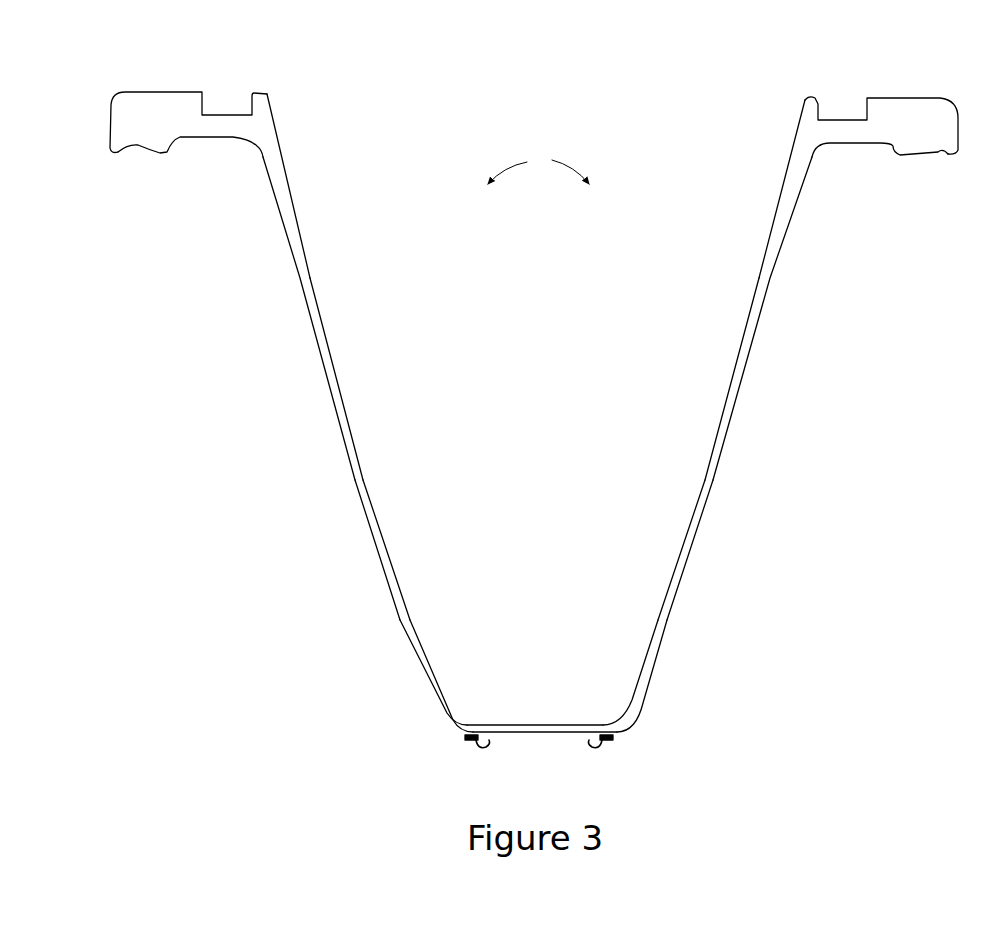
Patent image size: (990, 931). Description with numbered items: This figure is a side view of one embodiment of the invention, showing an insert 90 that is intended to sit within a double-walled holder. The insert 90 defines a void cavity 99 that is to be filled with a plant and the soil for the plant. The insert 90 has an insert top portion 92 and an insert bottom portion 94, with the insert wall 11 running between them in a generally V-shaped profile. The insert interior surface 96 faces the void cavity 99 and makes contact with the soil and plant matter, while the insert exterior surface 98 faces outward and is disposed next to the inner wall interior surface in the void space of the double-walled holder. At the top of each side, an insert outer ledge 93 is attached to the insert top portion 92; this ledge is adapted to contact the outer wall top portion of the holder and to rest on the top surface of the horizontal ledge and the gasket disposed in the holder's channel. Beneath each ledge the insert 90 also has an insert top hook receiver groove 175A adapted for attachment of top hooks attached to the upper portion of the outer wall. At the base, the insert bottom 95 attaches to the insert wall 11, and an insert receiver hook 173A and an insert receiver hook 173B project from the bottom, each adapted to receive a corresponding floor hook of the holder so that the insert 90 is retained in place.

The insert wall 11 is at (333, 408).
The insert 90 is at (324, 347).
The insert top portion 92 is at (286, 164).
The insert outer ledge 93 is at (146, 89).
The insert bottom portion 94 is at (444, 717).
The insert bottom 95 is at (537, 722).
The insert interior surface 96 is at (361, 452).
The insert exterior surface 98 is at (296, 283).
The void cavity 99 is at (538, 169).
The insert receiver hook 173A is at (614, 737).
The insert receiver hook 173B is at (456, 737).
The insert top hook receiver groove 175A is at (139, 153).